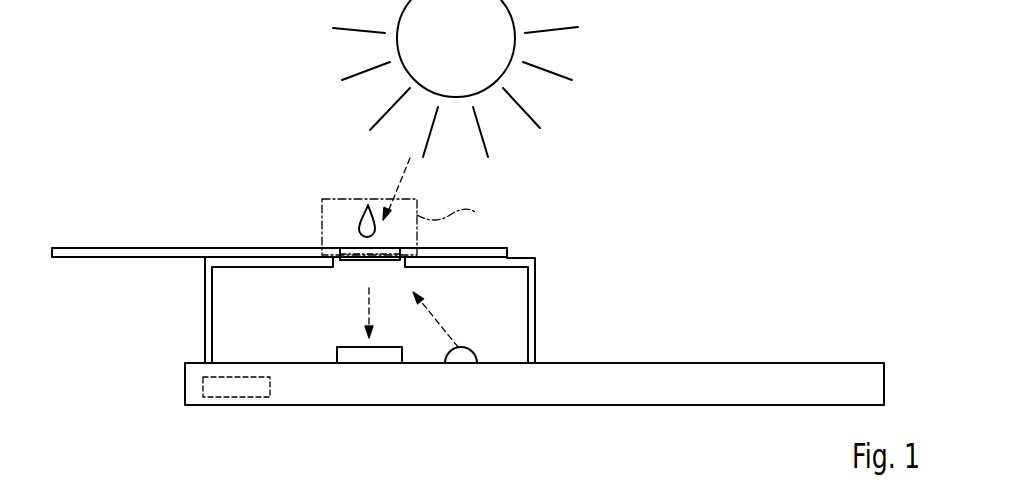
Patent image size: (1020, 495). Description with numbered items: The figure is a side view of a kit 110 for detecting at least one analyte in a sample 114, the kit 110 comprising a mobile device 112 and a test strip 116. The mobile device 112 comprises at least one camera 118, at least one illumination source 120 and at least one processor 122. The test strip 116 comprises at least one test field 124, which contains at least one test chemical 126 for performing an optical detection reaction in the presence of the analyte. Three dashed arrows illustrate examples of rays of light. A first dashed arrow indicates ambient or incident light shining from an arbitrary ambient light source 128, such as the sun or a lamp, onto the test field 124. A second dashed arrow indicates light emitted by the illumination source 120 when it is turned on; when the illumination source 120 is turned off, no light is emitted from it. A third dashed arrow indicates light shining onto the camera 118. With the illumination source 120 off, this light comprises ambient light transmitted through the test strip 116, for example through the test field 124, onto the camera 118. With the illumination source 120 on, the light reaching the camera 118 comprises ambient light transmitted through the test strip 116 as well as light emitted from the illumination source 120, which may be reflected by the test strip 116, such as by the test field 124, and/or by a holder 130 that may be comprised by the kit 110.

The kit 110 is at (653, 195).
The mobile device 112 is at (702, 340).
The sample 114 is at (363, 225).
The test strip 116 is at (158, 235).
The camera 118 is at (370, 357).
The illumination source 120 is at (460, 357).
The processor 122 is at (203, 383).
The test field 124 is at (311, 224).
The test chemical 126 is at (353, 250).
The ambient light source 128 is at (472, 50).
The holder 130 is at (205, 318).